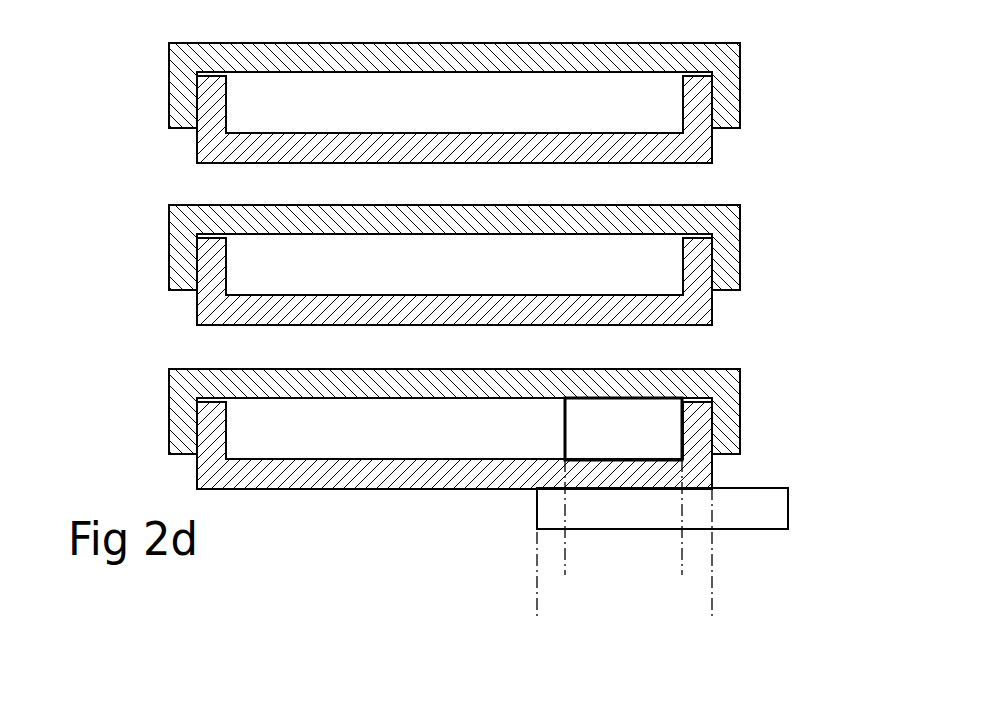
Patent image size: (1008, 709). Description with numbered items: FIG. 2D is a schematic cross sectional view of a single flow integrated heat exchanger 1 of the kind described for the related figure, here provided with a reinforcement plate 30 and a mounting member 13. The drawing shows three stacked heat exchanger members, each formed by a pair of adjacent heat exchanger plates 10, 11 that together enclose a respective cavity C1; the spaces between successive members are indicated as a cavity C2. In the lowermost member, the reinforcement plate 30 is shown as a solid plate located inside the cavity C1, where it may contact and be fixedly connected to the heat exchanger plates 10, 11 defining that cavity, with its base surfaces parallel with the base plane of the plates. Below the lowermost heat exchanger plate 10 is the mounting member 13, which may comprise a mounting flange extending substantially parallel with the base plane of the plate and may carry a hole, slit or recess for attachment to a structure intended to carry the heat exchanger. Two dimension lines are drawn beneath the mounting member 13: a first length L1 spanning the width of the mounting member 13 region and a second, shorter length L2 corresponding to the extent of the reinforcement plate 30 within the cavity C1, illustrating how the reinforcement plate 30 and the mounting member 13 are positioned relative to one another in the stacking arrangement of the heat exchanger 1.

The capacitor stack assembly 1 is at (126, 73).
The heat exchanger plate 11 is at (741, 70).
The heat exchanger plate 10 is at (703, 152).
The reinforcement plate 30 is at (663, 427).
The mounting member 13 is at (778, 515).
The cavity C1 is at (257, 100).
The cavity C2 is at (257, 192).
The first length L1 is at (712, 612).
The second length L2 is at (682, 568).